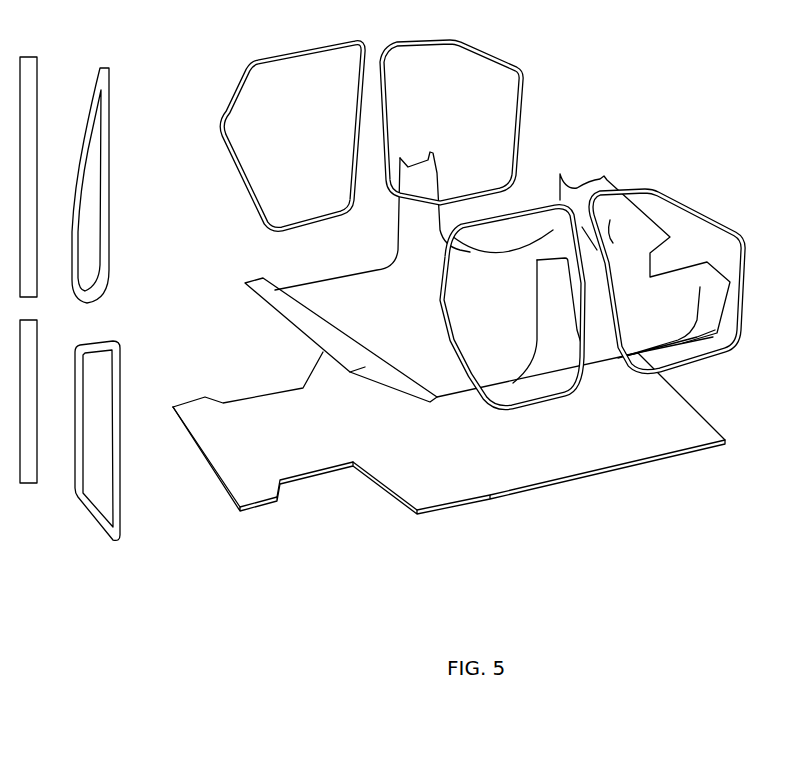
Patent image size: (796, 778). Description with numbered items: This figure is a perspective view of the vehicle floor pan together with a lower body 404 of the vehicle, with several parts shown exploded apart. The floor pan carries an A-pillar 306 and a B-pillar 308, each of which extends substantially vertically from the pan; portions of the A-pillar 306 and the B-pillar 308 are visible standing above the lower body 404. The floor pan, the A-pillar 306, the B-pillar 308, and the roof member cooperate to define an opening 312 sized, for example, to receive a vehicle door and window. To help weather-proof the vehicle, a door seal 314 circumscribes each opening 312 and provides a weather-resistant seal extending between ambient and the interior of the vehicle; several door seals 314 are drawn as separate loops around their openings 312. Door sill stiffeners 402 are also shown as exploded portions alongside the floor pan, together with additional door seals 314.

The A-pillar 306 is at (605, 178).
The B-pillar 308 is at (413, 228).
The opening 312 is at (318, 142).
The door seal 314 is at (107, 208).
The door sill stiffener 402 is at (30, 62).
The lower body 404 is at (605, 446).